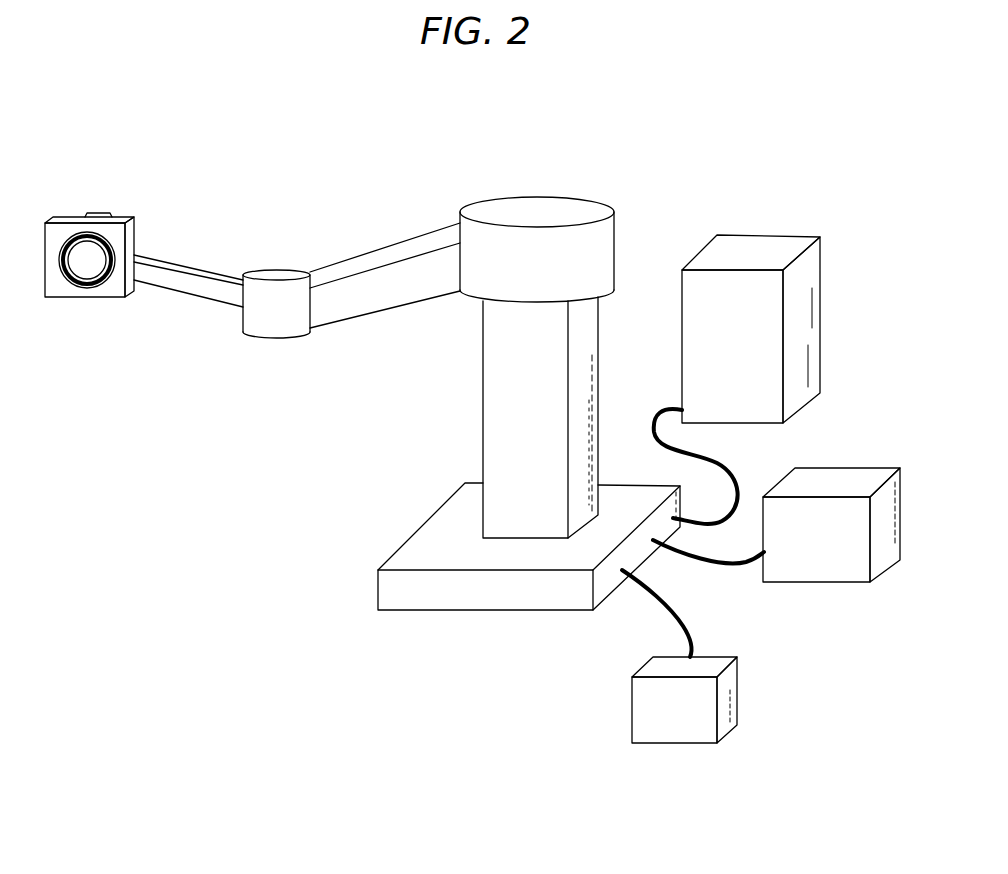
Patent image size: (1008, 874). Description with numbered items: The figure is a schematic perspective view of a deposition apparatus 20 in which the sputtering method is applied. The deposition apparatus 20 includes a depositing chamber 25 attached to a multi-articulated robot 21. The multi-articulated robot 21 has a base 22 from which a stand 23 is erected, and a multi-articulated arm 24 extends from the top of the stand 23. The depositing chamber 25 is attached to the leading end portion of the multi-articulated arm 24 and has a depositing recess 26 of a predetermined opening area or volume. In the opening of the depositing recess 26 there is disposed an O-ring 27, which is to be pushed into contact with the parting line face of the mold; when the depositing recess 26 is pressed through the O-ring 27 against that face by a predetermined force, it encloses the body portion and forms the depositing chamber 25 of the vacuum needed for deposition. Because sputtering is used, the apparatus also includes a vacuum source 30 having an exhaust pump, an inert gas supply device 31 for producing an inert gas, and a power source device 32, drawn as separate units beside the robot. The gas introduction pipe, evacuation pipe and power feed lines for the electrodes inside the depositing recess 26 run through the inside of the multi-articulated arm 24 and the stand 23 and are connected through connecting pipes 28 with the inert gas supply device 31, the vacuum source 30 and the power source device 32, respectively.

The deposition apparatus 20 is at (682, 184).
The multi-articulated robot 21 is at (497, 178).
The base 22 is at (410, 543).
The stand 23 is at (488, 398).
The multi-articulated arm 24 is at (368, 305).
The depositing chamber 25 is at (156, 224).
The depositing recess 26 is at (90, 268).
The O-ring 27 is at (68, 284).
The connecting pipes 28 is at (743, 483).
The vacuum source 30 is at (738, 682).
The inert gas supply device 31 is at (858, 477).
The power source device 32 is at (820, 262).